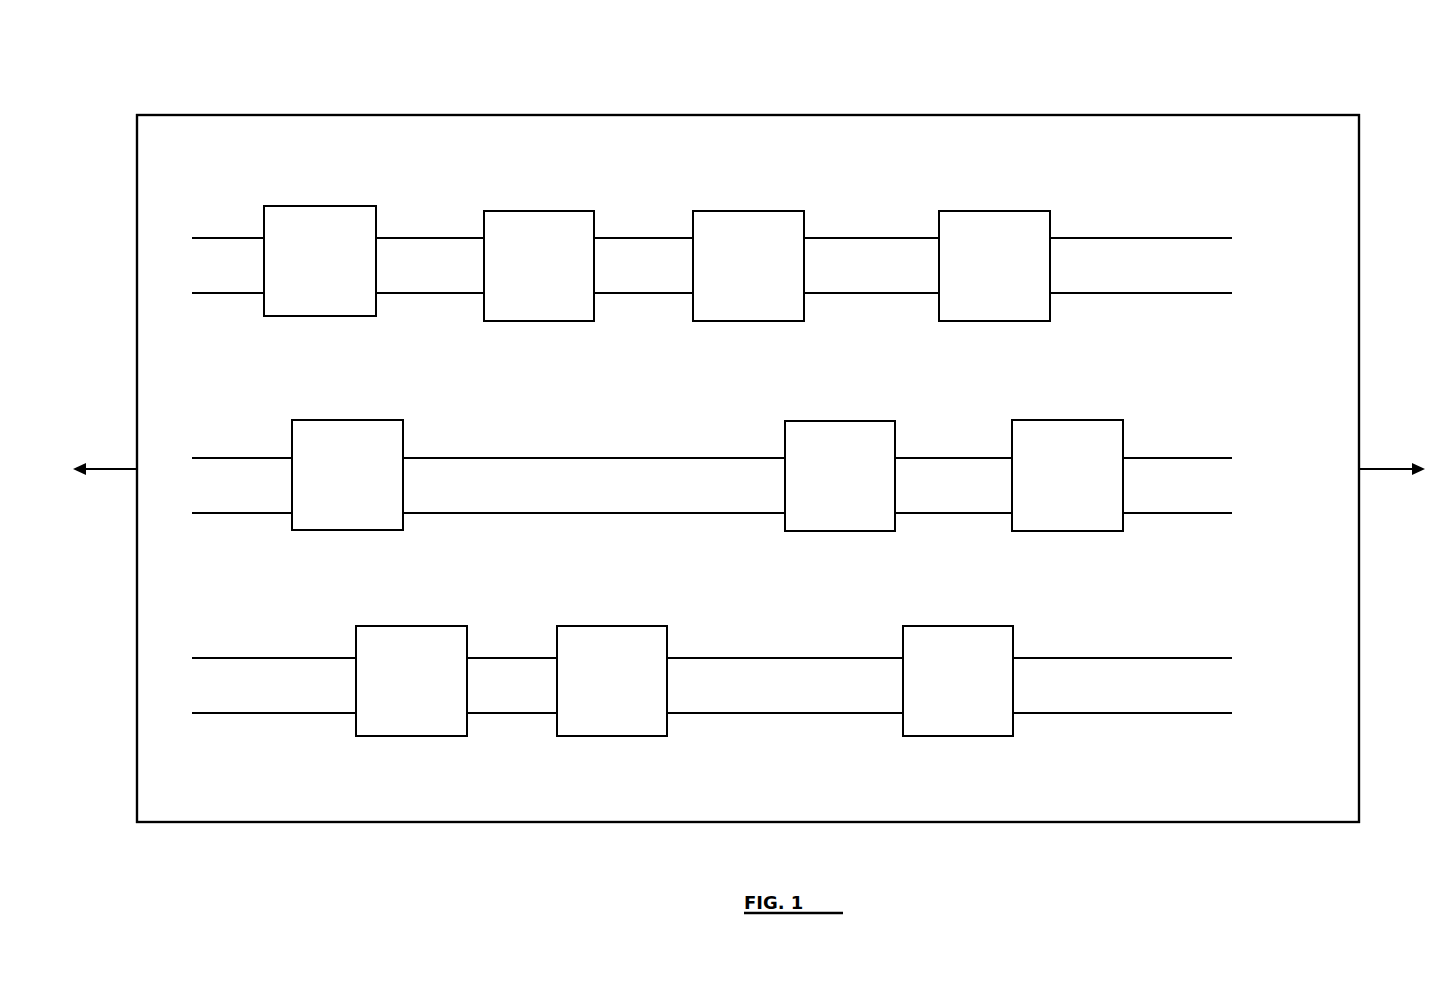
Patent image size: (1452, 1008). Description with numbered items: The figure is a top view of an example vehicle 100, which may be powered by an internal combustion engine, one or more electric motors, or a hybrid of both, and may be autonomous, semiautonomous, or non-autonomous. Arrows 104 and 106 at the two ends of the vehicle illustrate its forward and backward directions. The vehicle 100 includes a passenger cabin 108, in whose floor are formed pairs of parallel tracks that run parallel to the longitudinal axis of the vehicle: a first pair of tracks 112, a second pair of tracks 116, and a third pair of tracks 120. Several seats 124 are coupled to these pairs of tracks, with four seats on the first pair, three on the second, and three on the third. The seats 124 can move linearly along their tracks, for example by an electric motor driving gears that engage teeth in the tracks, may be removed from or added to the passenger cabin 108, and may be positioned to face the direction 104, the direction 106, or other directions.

The vehicle 100 is at (872, 115).
The forward direction arrow 104 is at (1383, 468).
The backward direction arrow 106 is at (118, 468).
The passenger cabin 108 is at (1241, 157).
The first pair of tracks 112 is at (1132, 238).
The second pair of tracks 116 is at (650, 458).
The third pair of tracks 120 is at (1125, 658).
The seats 124 is at (320, 206).